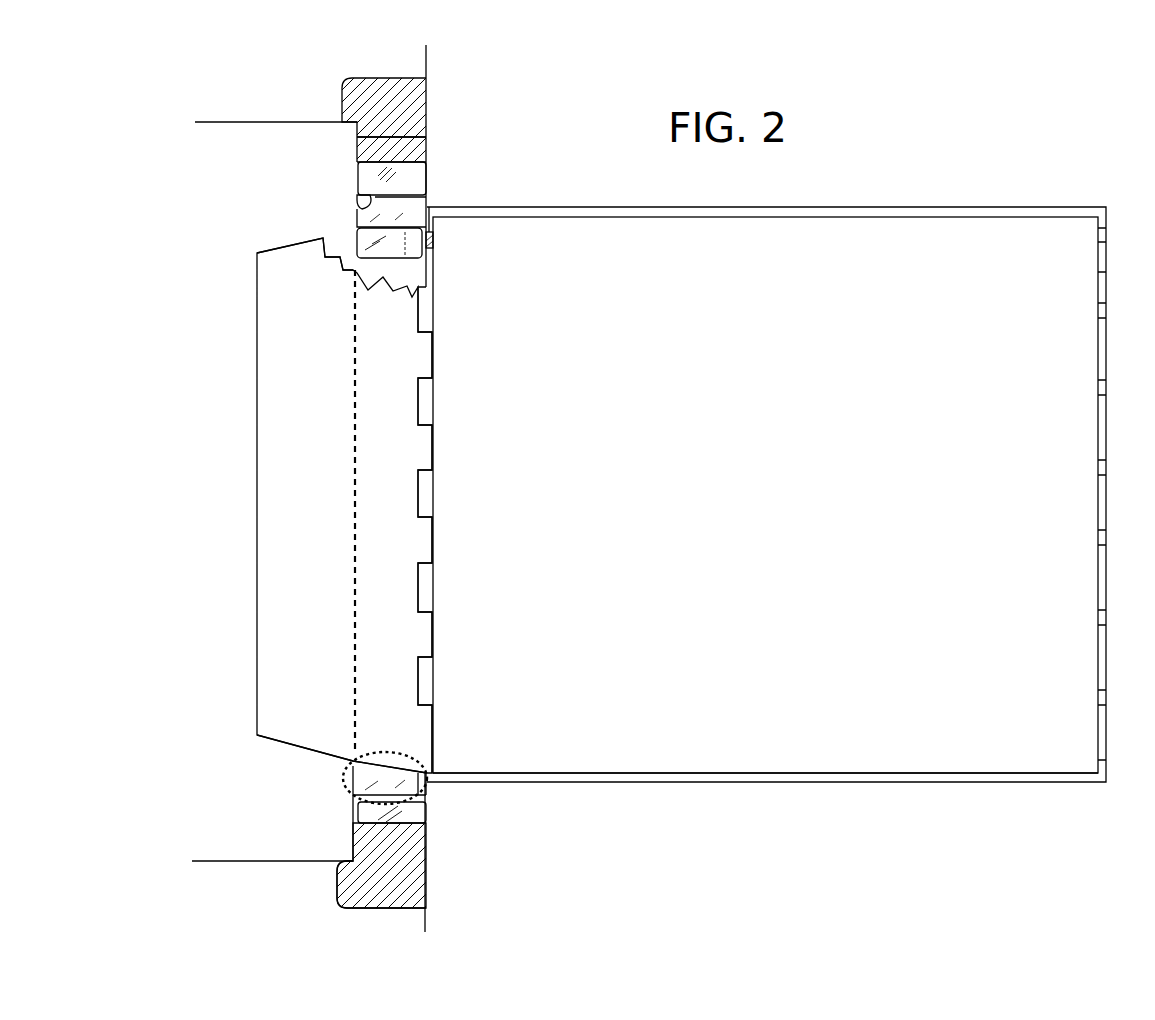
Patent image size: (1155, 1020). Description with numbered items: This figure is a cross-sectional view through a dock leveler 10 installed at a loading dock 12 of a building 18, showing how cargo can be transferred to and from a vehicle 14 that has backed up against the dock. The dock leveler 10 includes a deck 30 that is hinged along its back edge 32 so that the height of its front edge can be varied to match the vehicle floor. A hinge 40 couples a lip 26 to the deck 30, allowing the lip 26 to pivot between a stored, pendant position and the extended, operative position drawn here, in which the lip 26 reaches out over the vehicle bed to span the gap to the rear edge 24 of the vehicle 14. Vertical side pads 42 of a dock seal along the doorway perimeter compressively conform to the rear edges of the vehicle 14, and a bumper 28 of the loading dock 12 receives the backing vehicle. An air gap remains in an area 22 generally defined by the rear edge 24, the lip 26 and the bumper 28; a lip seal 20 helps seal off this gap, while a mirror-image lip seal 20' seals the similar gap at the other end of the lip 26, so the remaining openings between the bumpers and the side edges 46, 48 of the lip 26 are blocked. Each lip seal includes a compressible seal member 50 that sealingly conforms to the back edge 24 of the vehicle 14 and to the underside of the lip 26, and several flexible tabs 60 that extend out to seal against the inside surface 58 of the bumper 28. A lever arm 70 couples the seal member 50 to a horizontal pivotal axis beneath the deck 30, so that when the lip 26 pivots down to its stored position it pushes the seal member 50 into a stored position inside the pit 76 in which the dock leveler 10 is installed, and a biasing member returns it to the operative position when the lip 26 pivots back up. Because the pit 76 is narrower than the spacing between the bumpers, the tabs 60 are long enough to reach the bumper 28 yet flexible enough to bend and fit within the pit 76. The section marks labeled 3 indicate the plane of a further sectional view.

The dock leveler 10 is at (838, 179).
The loading dock 12 is at (351, 55).
The vehicle 14 is at (228, 122).
The building 18 is at (422, 922).
The lip seal 20 is at (276, 195).
The lip seal 20' is at (275, 828).
The area 22 is at (428, 786).
The rear edge 24 is at (393, 138).
The lip 26 is at (257, 604).
The bumper 28 is at (372, 173).
The deck 30 is at (930, 208).
The back edge 32 is at (1100, 268).
The hinge 40 is at (427, 310).
The vertical side pads 42 is at (340, 97).
The side edge 46 is at (270, 742).
The side edge 48 is at (258, 253).
The seal member 50 is at (363, 240).
The inside surface 58 is at (358, 200).
The flexible tab 60 is at (394, 210).
The lever arm 70 is at (429, 232).
The pit 76 is at (618, 782).
The section line for FIG. 3 is at (275, 432).